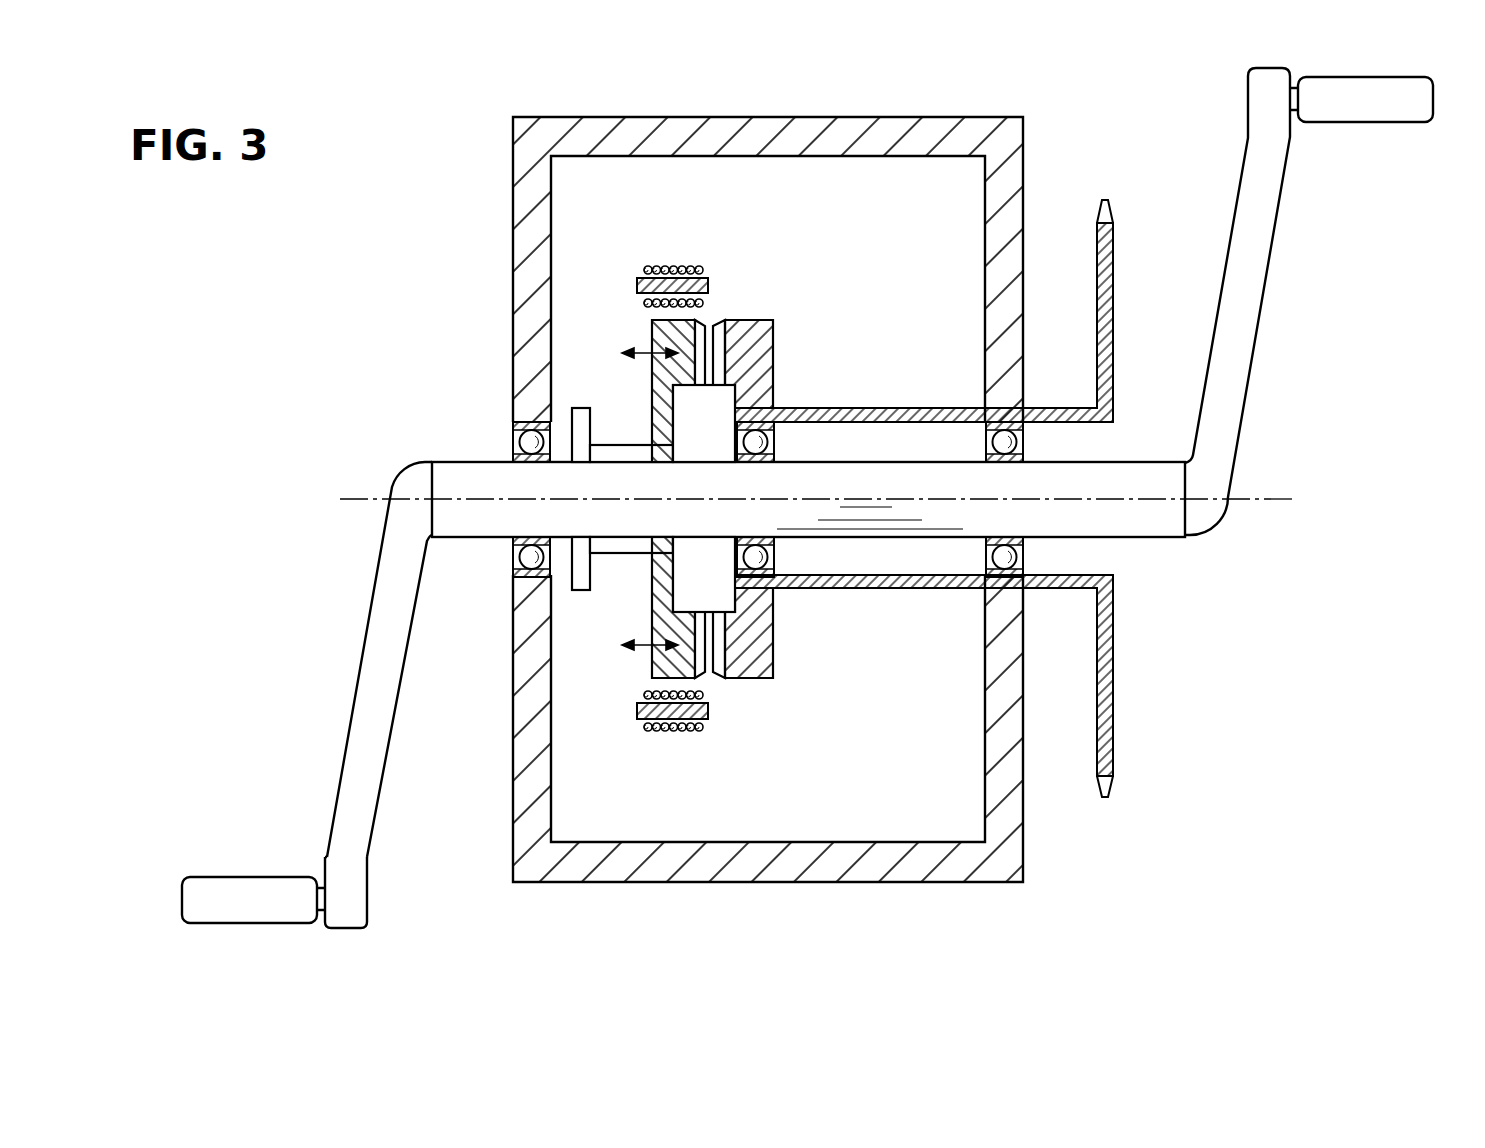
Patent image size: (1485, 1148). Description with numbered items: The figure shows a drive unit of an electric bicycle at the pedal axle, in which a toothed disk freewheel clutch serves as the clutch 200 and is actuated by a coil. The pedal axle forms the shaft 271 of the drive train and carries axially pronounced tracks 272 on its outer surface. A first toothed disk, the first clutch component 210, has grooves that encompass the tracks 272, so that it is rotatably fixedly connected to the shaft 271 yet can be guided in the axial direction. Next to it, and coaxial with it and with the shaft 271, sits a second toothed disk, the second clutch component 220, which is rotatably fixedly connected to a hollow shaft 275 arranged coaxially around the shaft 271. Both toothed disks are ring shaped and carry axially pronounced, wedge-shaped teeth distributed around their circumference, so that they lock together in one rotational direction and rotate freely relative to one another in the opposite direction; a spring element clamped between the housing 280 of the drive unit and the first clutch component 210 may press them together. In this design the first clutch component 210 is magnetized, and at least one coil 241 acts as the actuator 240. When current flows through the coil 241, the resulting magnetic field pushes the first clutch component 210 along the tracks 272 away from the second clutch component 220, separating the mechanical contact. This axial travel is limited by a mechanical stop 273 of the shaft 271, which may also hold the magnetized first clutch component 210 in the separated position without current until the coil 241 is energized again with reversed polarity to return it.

The clutch 200 is at (708, 465).
The first clutch component 210 is at (672, 335).
The second clutch component 220 is at (755, 357).
The actuator 240 is at (664, 490).
The coil 241 is at (682, 266).
The shaft 271 is at (457, 480).
The tracks 272 is at (633, 452).
The mechanical stop 273 is at (582, 427).
The hollow shaft 275 is at (918, 415).
The housing 280 is at (530, 251).